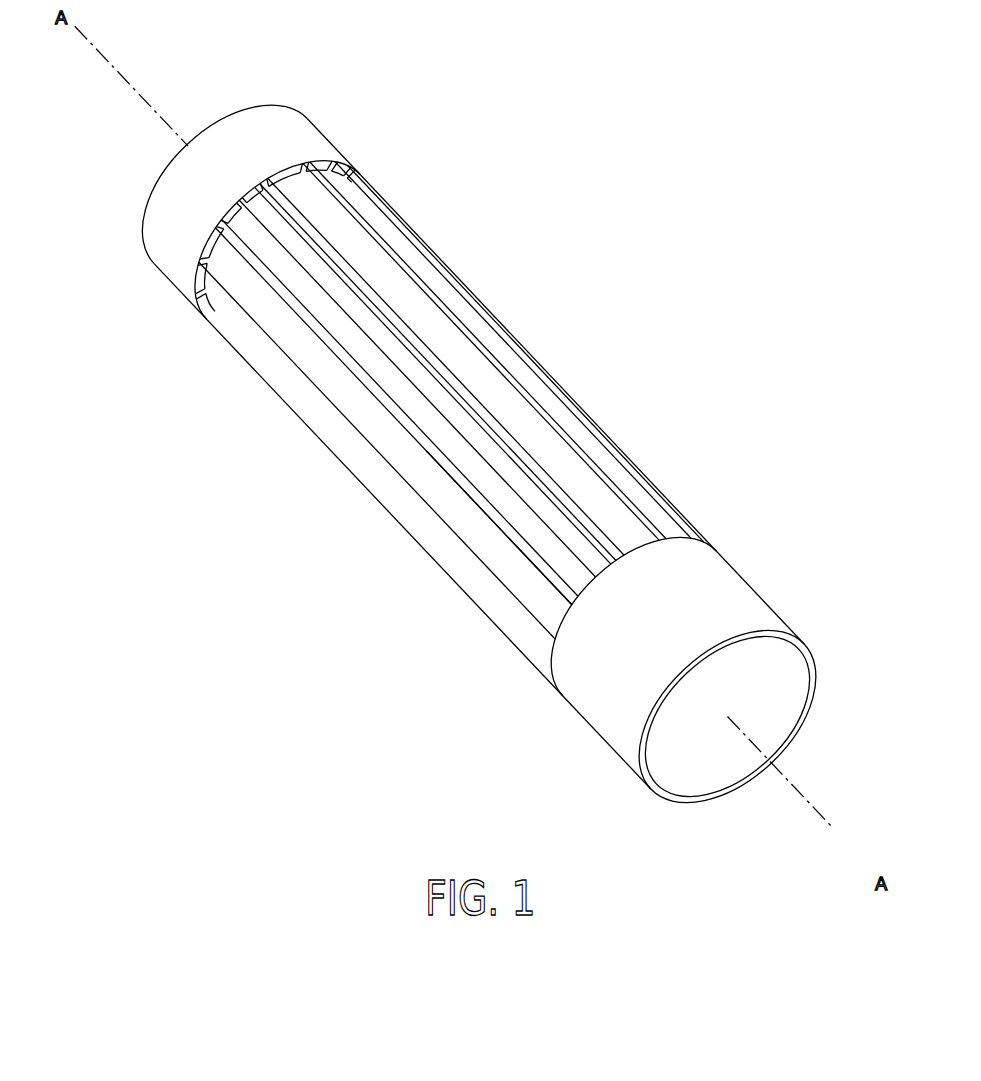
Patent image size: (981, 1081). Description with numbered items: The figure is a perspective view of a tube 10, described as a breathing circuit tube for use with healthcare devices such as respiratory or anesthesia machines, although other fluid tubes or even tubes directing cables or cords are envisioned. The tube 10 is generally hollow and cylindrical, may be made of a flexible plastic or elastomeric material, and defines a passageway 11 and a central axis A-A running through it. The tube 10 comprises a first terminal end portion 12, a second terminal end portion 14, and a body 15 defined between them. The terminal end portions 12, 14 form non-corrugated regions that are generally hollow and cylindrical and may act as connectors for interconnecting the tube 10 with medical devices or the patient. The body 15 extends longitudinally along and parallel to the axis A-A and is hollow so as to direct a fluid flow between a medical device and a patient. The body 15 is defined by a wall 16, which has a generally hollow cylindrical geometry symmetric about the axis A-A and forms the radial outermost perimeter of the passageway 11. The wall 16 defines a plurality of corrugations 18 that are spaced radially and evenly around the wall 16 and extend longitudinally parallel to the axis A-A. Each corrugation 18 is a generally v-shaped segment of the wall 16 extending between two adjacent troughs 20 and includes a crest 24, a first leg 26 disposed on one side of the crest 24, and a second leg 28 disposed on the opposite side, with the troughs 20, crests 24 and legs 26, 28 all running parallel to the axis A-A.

The tube 10 is at (771, 258).
The passageway 11 is at (778, 690).
The first terminal end portion 12 is at (728, 600).
The second terminal end portion 14 is at (303, 148).
The body 15 is at (476, 366).
The wall 16 is at (540, 392).
The corrugation 18 is at (513, 537).
The trough 20 is at (470, 503).
The crest 24 is at (403, 410).
The first leg 26 is at (382, 385).
The second leg 28 is at (343, 318).